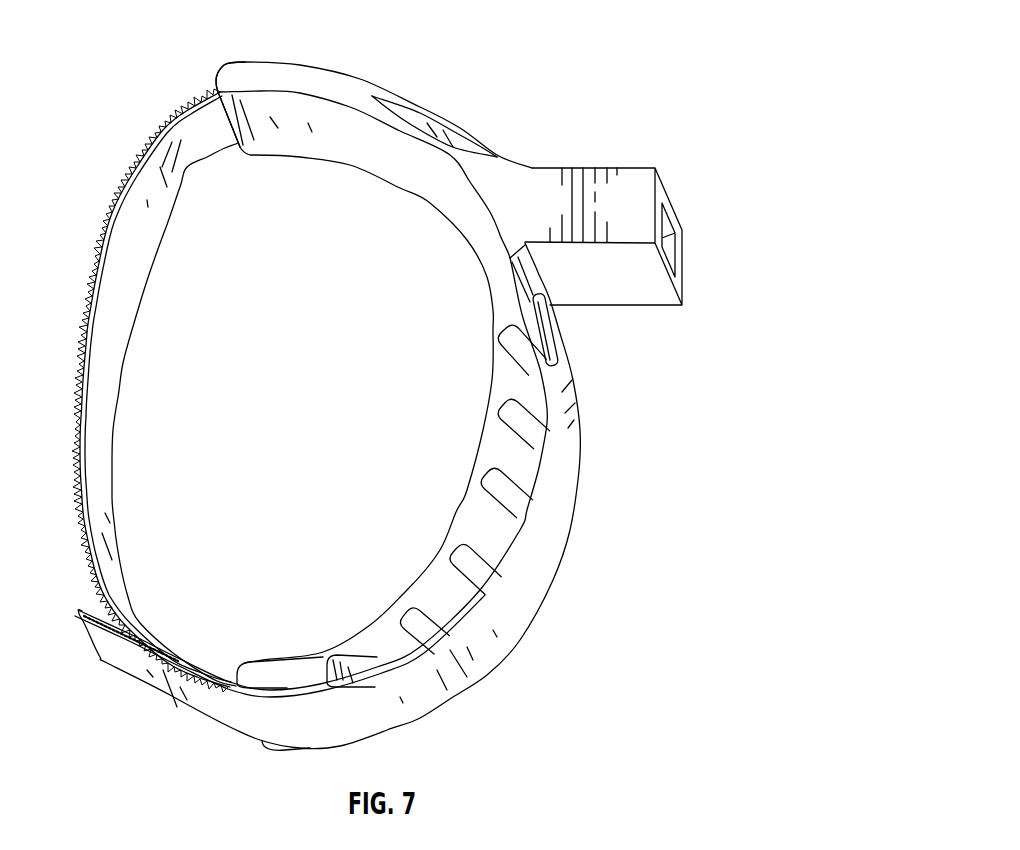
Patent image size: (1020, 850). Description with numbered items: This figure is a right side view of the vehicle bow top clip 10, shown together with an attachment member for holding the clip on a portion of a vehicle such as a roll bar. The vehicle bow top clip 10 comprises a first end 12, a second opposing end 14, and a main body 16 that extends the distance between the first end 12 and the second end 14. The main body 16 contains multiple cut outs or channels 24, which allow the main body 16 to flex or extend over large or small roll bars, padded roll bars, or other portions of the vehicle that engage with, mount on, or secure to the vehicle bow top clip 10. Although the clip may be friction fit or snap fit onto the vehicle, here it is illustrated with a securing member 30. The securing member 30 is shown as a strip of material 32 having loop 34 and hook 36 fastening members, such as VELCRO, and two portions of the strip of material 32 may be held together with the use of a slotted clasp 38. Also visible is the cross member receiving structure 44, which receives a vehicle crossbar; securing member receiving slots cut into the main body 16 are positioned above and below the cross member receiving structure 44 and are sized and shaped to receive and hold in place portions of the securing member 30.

The vehicle bow top clip 10 is at (255, 63).
The first end 12 is at (215, 72).
The second opposing end 14 is at (231, 712).
The main body 16 is at (365, 100).
The channels 24 is at (512, 338).
The securing member 30 is at (100, 253).
The strip of material 32 is at (152, 182).
The loop fastening member 34 is at (90, 610).
The hook fastening member 36 is at (106, 215).
The slotted clasp 38 is at (555, 342).
The cross member receiving structure 44 is at (634, 167).